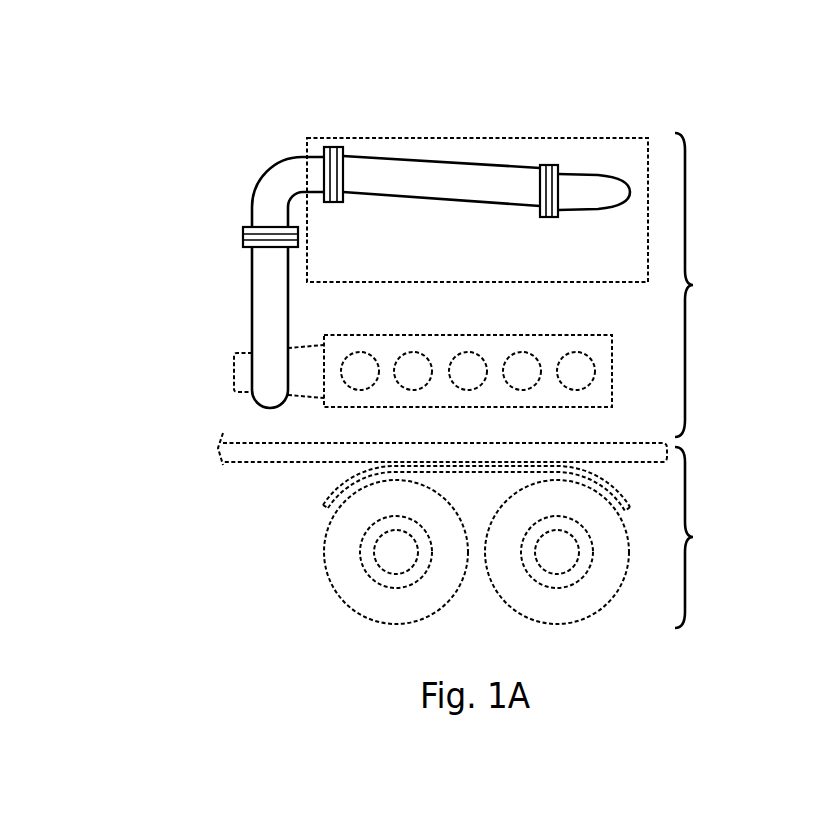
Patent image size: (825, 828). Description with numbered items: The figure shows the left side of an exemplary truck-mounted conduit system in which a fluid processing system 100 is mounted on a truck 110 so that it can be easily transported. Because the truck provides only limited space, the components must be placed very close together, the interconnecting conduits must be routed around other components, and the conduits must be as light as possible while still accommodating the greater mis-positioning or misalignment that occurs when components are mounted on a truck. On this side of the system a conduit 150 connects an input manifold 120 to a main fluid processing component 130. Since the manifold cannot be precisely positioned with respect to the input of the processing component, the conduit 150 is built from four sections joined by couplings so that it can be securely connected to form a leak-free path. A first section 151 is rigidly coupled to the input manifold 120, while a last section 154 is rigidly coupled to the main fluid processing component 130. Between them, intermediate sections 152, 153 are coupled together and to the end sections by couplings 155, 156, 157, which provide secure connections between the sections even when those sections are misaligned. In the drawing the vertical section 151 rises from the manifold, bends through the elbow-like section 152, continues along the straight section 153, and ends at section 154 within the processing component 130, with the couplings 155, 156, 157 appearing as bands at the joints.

The fluid processing system 100 is at (703, 285).
The truck 110 is at (474, 530).
The input manifold 120 is at (438, 335).
The main fluid processing component 130 is at (467, 138).
The conduit 150 is at (236, 170).
The conduit section 151 is at (252, 305).
The conduit section 152 is at (297, 155).
The conduit section 153 is at (383, 197).
The conduit section 154 is at (600, 174).
The coupling 155 is at (243, 230).
The coupling 156 is at (333, 147).
The coupling 157 is at (547, 218).